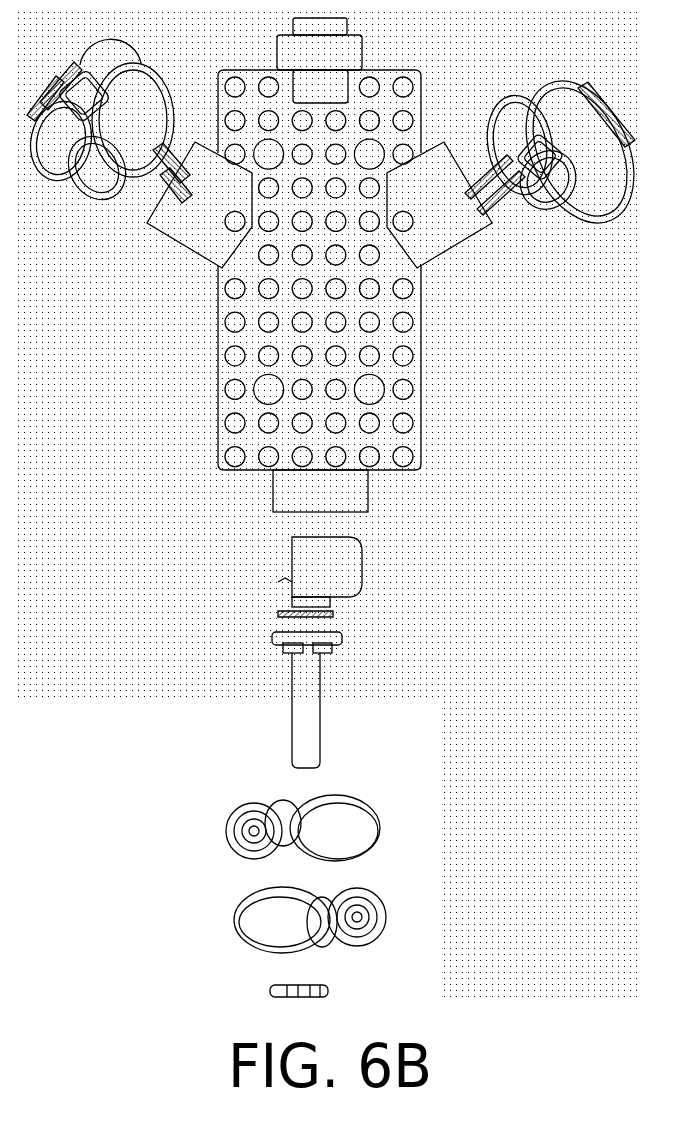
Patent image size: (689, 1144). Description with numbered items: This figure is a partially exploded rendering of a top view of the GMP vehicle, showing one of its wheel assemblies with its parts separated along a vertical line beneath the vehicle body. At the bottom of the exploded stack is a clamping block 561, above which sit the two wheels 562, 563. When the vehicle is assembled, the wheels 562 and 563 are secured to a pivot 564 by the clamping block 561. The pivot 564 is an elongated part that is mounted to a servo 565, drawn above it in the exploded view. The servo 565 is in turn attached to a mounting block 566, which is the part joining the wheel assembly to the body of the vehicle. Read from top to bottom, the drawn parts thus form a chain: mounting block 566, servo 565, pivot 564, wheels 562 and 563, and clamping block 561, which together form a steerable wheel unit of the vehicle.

The clamping block 561 is at (337, 995).
The wheel 562 is at (363, 918).
The wheel 563 is at (350, 832).
The pivot 564 is at (308, 706).
The servo 565 is at (332, 563).
The mounting block 566 is at (325, 487).